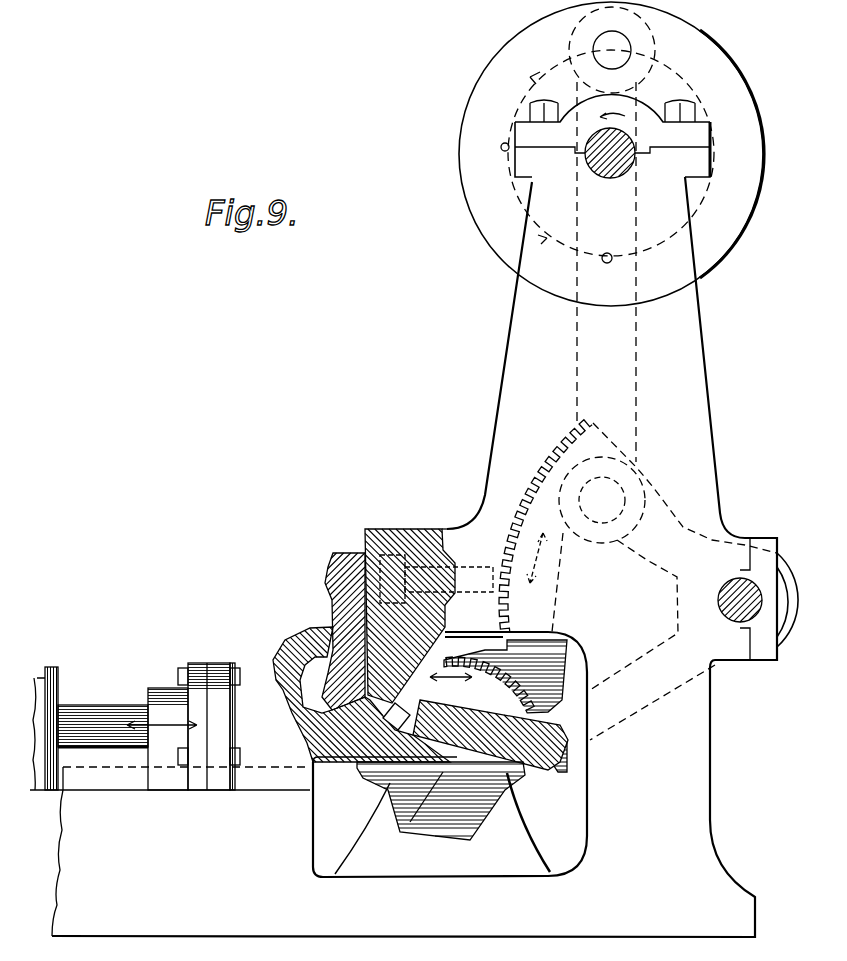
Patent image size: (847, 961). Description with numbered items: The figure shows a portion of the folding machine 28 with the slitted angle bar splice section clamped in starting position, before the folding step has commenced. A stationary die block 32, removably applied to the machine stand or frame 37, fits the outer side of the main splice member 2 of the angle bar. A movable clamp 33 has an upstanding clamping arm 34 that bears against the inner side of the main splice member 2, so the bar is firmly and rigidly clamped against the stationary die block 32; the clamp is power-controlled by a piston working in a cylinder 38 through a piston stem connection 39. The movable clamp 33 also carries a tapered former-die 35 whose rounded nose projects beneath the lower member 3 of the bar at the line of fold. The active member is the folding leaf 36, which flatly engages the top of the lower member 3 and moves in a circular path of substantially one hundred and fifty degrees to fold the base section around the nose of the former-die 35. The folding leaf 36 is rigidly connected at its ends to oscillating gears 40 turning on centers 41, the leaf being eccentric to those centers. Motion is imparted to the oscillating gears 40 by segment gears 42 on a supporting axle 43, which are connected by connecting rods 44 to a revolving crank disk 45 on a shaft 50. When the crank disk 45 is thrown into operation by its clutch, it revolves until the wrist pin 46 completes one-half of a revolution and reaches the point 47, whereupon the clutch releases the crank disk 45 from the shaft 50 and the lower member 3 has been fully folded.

The main splice member 2 is at (327, 582).
The lower member 3 is at (523, 770).
The folding machine 28 is at (403, 485).
The stationary die block 32 is at (405, 538).
The movable clamp 33 is at (278, 683).
The clamping arm 34 is at (312, 628).
The former-die 35 is at (383, 760).
The folding leaf 36 is at (552, 728).
The machine stand or frame 37 is at (505, 433).
The cylinder 38 is at (58, 675).
The piston stem connection 39 is at (127, 708).
The oscillating gears 40 is at (487, 773).
The centers 41 is at (416, 816).
The segment gears 42 is at (583, 723).
The supporting axle 43 is at (733, 583).
The connecting rods 44 is at (637, 388).
The crank disk 45 is at (763, 155).
The wrist pin 46 is at (612, 49).
The point 47 is at (612, 262).
The shaft 50 is at (617, 163).